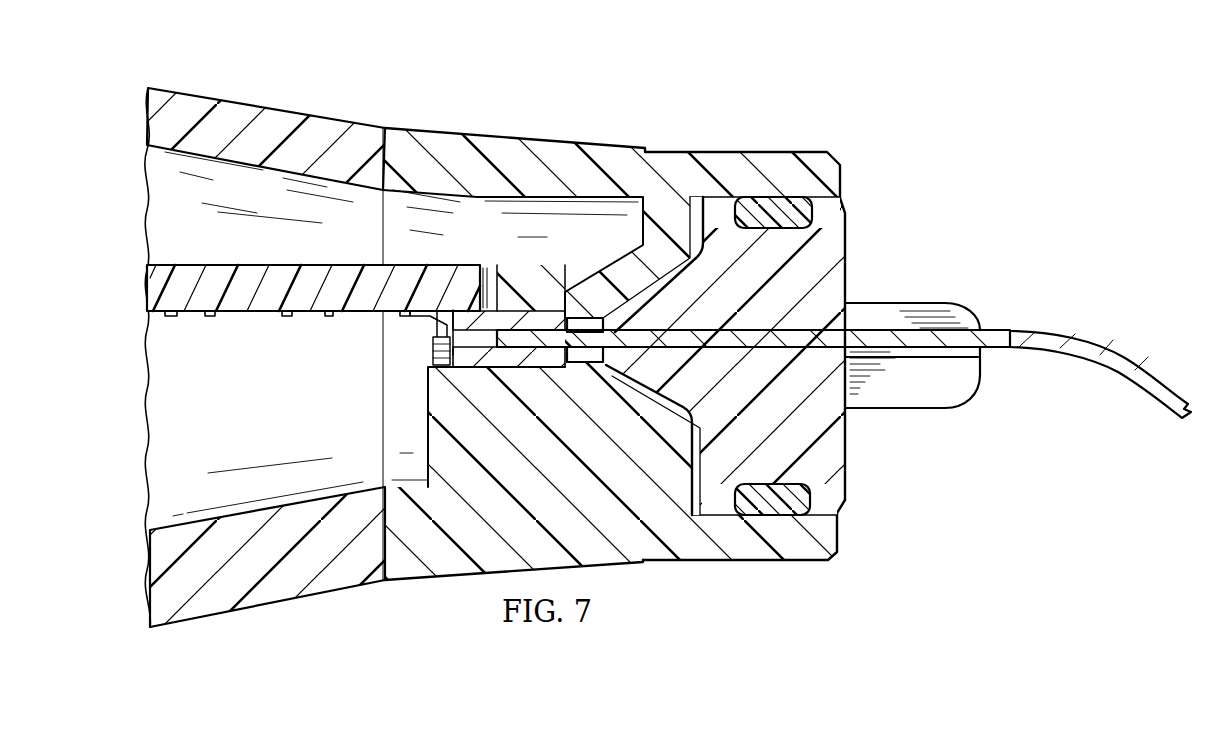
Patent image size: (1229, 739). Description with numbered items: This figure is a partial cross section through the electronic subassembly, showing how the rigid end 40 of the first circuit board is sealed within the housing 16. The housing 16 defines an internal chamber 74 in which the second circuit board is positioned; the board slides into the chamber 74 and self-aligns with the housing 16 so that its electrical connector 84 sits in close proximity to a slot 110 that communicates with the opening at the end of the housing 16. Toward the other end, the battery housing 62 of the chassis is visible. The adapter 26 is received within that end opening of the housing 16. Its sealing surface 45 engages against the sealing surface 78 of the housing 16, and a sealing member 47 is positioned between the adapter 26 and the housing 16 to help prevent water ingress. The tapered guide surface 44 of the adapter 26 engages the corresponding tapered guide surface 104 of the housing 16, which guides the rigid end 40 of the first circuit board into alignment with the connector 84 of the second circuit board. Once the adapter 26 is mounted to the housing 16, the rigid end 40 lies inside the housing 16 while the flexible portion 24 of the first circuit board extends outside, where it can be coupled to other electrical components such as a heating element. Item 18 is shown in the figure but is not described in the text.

The housing 16 is at (262, 600).
The fitting body 18 is at (857, 444).
The flexible portion 24 is at (1135, 371).
The adapter 26 is at (841, 484).
The rigid end 40 is at (511, 332).
The tapered guide surface 44 is at (675, 272).
The sealing surface 45 is at (818, 520).
The sealing member 47 is at (762, 517).
The battery housing 62 is at (847, 198).
The chamber 74 is at (270, 186).
The sealing surface 78 is at (818, 202).
The electrical connector 84 is at (541, 312).
The tapered guide surface 104 is at (633, 385).
The slot 110 is at (594, 318).